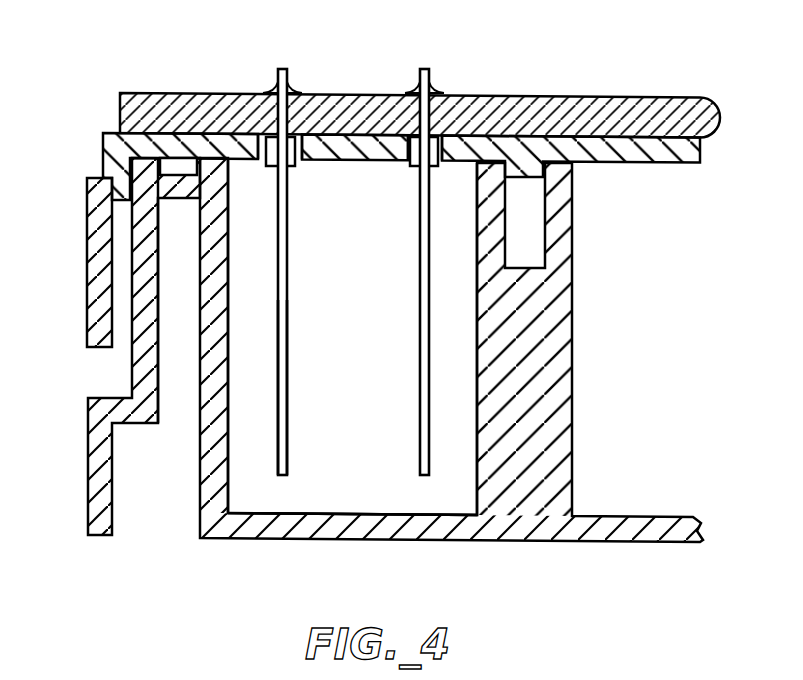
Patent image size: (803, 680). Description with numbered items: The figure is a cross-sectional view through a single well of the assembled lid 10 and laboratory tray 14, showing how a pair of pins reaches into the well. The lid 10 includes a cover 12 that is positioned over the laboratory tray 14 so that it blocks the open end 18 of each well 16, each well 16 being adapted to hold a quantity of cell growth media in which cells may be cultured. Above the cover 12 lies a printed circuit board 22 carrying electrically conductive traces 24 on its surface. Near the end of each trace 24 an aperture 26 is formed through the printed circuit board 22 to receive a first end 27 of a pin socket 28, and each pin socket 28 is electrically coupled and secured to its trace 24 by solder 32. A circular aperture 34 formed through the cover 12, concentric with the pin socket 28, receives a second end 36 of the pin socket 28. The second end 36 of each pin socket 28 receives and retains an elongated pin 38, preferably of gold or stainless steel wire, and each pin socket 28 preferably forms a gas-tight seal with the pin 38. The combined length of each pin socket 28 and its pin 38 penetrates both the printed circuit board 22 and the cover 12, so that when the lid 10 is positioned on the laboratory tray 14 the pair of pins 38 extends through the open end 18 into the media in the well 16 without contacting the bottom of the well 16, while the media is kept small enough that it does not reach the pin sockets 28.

The lid 10 is at (657, 165).
The cover 12 is at (87, 222).
The laboratory tray 14 is at (297, 542).
The well 16 is at (387, 502).
The open end 18 is at (367, 276).
The printed circuit board 22 is at (657, 103).
The electrically conductive trace 24 is at (262, 92).
The aperture 26 is at (300, 90).
The first end 27 is at (282, 70).
The pin socket 28 is at (297, 158).
The solder 32 is at (278, 88).
The circular aperture 34 is at (265, 160).
The second end 36 is at (288, 167).
The pin 38 is at (420, 320).